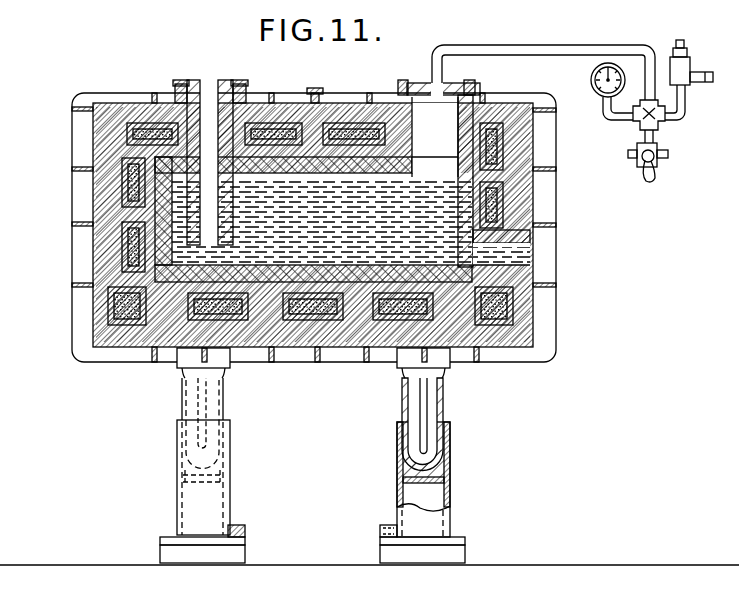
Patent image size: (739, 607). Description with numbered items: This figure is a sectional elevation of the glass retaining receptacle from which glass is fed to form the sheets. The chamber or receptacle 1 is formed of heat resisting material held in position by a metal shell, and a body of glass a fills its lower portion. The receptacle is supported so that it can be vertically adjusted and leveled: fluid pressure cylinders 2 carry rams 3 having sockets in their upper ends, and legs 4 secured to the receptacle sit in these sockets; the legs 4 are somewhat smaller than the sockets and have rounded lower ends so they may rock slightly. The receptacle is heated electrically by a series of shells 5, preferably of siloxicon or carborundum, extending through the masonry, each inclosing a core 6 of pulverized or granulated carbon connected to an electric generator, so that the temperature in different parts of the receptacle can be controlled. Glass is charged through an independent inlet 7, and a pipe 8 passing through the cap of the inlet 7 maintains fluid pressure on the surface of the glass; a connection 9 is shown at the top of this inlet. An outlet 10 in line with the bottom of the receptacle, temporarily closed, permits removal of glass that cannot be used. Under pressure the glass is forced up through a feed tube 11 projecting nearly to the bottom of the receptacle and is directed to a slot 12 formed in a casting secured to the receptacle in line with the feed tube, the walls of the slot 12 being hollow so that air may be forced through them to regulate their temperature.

The chamber or receptacle 1 is at (177, 186).
The fluid pressure cylinders 2 is at (227, 466).
The rams 3 is at (218, 412).
The legs 4 is at (180, 371).
The shells 5 is at (155, 265).
The cores 6 is at (125, 247).
The inlet 7 is at (442, 181).
The pipe 8 is at (540, 47).
The pipe fitting 9 is at (414, 88).
The outlet 10 is at (520, 250).
The feed tube 11 is at (123, 198).
The slot 12 is at (216, 90).
The liquid a is at (362, 232).